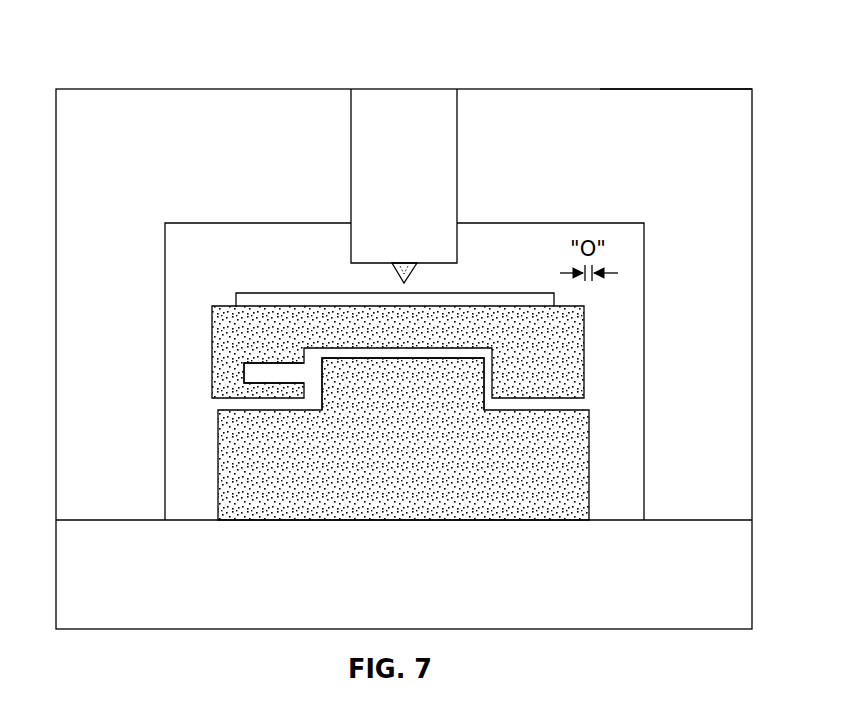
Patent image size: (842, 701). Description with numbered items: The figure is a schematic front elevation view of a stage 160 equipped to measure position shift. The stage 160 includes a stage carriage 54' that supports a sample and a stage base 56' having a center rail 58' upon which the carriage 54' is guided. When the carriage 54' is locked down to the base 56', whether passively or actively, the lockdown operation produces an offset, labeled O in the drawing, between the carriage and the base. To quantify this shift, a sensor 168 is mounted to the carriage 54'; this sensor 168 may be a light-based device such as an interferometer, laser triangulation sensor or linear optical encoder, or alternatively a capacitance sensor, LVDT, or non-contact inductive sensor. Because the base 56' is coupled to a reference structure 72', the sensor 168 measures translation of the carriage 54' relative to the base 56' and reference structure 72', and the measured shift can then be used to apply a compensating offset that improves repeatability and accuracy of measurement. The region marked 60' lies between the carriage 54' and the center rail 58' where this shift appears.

The stage 160 is at (150, 64).
The reference structure 72' is at (676, 69).
The stage carriage 54' is at (455, 360).
The sensor 168 is at (253, 360).
The stage base 56' is at (348, 439).
The center rail 58' is at (431, 403).
The forming gap 60' is at (377, 270).